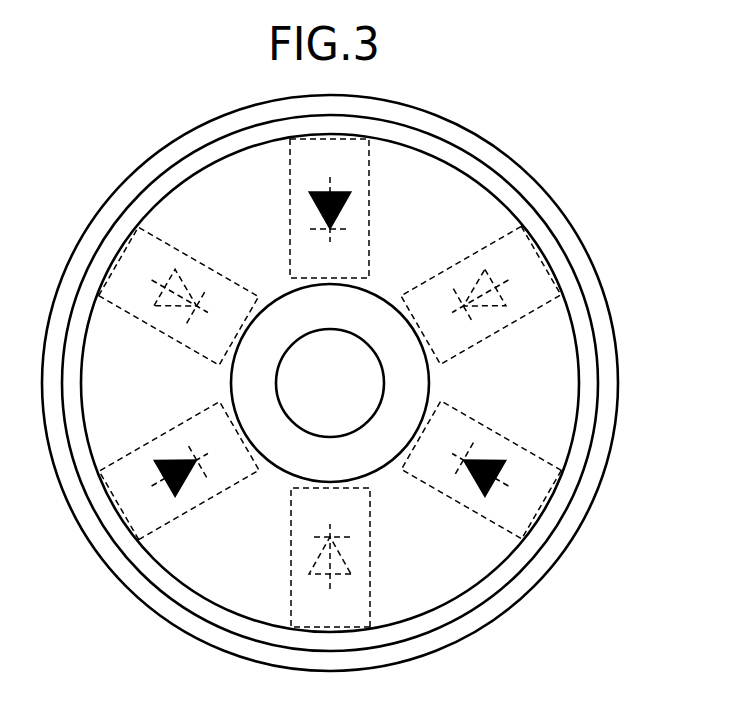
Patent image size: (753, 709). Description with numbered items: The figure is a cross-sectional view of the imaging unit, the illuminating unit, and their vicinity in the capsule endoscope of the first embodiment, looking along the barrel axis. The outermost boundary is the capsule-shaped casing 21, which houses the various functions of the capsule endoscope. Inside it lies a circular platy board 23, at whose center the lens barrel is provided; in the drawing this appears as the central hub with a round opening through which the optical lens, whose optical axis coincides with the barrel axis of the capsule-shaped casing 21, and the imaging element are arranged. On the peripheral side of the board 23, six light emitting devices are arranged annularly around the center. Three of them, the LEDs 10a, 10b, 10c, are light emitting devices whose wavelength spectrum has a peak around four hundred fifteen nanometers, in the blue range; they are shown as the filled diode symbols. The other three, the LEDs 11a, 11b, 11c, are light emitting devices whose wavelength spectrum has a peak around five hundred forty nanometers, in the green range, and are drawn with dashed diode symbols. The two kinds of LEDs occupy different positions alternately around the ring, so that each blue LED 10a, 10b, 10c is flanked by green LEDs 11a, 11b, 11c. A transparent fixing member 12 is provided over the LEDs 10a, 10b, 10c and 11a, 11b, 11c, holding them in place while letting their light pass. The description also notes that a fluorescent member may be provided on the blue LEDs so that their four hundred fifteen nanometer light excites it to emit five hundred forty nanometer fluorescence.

The LED 10a is at (287, 198).
The LED 10b is at (488, 435).
The LED 10c is at (162, 438).
The LED 11a is at (470, 255).
The LED 11b is at (287, 570).
The LED 11c is at (197, 260).
The transparent fixing member 12 is at (463, 573).
The capsule-shaped casing 21 is at (120, 182).
The board 23 is at (187, 168).